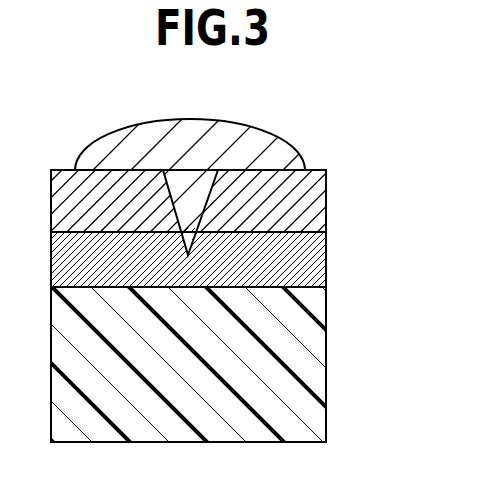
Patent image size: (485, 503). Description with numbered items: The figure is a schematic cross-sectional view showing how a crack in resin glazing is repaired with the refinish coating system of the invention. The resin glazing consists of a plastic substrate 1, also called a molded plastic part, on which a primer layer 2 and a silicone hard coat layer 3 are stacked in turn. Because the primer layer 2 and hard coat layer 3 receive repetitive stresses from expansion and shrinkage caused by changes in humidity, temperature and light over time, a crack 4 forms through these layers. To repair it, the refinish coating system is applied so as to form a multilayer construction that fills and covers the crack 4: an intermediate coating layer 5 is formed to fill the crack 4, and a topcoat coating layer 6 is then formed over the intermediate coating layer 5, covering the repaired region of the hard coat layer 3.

The plastic substrate 1 is at (303, 356).
The primer layer 2 is at (303, 259).
The silicone hard coat layer 3 is at (305, 208).
The crack 4 is at (204, 208).
The intermediate coating layer 5 is at (186, 197).
The topcoat coating layer 6 is at (248, 146).